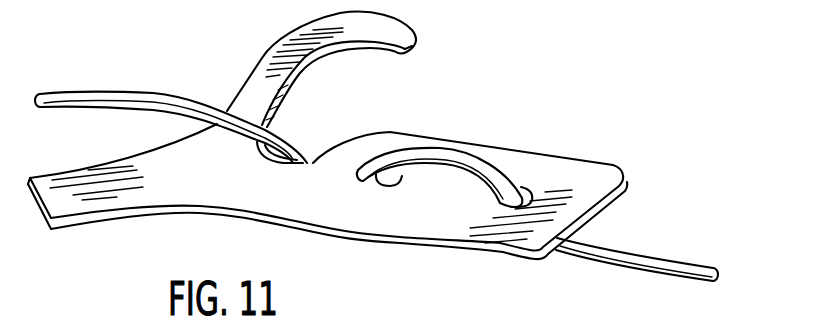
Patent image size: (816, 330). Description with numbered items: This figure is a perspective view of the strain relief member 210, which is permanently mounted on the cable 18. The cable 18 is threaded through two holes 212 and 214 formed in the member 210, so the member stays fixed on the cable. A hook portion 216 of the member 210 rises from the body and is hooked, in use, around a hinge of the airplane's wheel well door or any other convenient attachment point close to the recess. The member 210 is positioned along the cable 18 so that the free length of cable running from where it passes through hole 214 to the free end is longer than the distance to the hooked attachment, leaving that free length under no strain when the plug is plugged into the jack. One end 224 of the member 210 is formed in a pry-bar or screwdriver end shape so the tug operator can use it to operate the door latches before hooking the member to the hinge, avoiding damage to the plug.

The cable 18 is at (88, 95).
The strain relief member 210 is at (533, 157).
The hole 212 is at (503, 205).
The hole 214 is at (383, 184).
The hook portion 216 is at (410, 39).
The end 224 is at (80, 207).